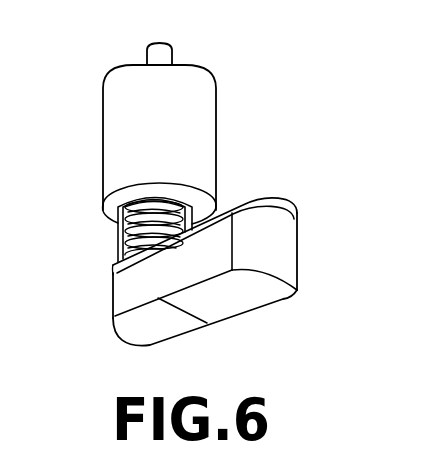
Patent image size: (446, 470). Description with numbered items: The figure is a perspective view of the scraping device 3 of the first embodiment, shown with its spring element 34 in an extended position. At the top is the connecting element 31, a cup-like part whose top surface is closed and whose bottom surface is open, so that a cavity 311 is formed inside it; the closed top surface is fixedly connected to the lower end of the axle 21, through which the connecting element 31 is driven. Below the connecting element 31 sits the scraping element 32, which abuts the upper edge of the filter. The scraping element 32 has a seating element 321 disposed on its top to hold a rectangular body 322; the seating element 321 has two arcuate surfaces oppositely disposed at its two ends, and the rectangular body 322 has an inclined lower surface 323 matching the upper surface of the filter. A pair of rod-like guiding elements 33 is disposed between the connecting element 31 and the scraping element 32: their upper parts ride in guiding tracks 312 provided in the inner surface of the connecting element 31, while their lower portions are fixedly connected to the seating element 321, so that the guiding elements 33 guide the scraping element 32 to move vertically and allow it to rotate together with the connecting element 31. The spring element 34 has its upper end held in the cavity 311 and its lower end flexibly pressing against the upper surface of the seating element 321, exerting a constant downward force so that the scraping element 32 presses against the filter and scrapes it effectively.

The scraping device 3 is at (280, 108).
The axle 21 is at (171, 52).
The connecting element 31 is at (120, 164).
The cavity 311 is at (164, 193).
The guiding tracks 312 is at (182, 192).
The guiding elements 33 is at (205, 203).
The spring element 34 is at (118, 232).
The scraping element 32 is at (298, 243).
The seating element 321 is at (277, 203).
The rectangular body 322 is at (280, 254).
The inclined lower surface 323 is at (284, 297).